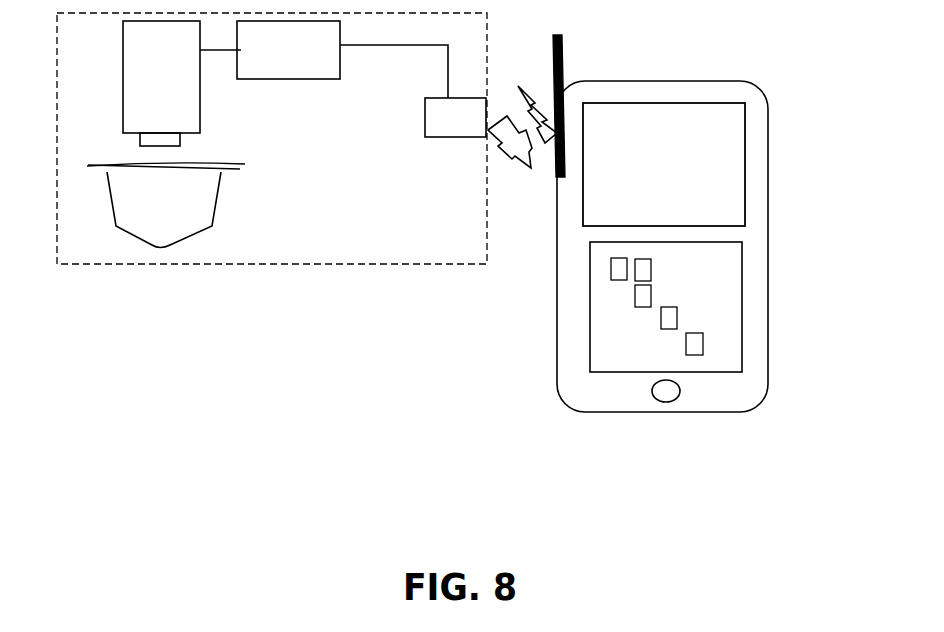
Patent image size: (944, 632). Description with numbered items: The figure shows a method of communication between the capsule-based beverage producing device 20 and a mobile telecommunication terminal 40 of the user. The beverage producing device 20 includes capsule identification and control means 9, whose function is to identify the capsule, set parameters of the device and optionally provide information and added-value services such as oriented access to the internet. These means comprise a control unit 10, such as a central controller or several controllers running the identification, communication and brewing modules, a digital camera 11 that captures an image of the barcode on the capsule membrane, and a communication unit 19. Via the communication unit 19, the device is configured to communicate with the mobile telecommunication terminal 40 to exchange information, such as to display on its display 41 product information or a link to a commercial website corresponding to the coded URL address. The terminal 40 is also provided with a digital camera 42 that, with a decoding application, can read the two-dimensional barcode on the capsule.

The capsule identification and control means 9 is at (304, 150).
The control unit 10 is at (292, 79).
The digital camera 11 is at (197, 99).
The communication unit 19 is at (440, 137).
The beverage producing device 20 is at (190, 256).
The mobile telecommunication terminal 40 is at (558, 294).
The display 41 is at (735, 127).
The digital camera 42 is at (657, 394).